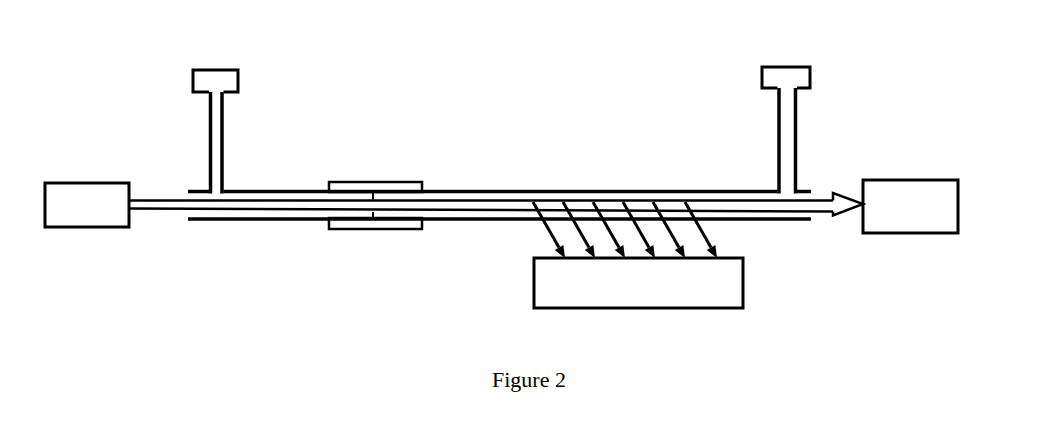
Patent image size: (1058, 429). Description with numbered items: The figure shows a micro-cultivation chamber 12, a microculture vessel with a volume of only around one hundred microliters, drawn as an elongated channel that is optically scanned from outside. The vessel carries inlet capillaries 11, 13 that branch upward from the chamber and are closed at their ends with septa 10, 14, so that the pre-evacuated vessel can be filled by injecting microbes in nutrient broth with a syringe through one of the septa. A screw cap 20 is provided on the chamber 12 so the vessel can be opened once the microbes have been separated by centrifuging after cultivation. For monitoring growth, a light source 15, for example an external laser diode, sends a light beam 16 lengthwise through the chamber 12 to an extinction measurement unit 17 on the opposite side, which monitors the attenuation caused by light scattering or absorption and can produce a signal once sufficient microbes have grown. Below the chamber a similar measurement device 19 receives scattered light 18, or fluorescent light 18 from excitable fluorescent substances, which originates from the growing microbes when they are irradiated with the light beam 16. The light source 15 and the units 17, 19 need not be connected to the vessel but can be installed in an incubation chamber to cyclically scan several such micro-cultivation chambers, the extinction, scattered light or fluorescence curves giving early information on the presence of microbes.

The first port 10 is at (215, 64).
The first side channel 11 is at (240, 143).
The micro-cultivation chamber 12 is at (499, 187).
The second side channel 13 is at (765, 141).
The second port 14 is at (786, 56).
The light source 15 is at (87, 205).
The light beam 16 is at (496, 193).
The extinction measurement unit 17 is at (910, 206).
The scattered light 18 is at (642, 230).
The measurement device 19 is at (638, 283).
The electrode 20 is at (375, 188).